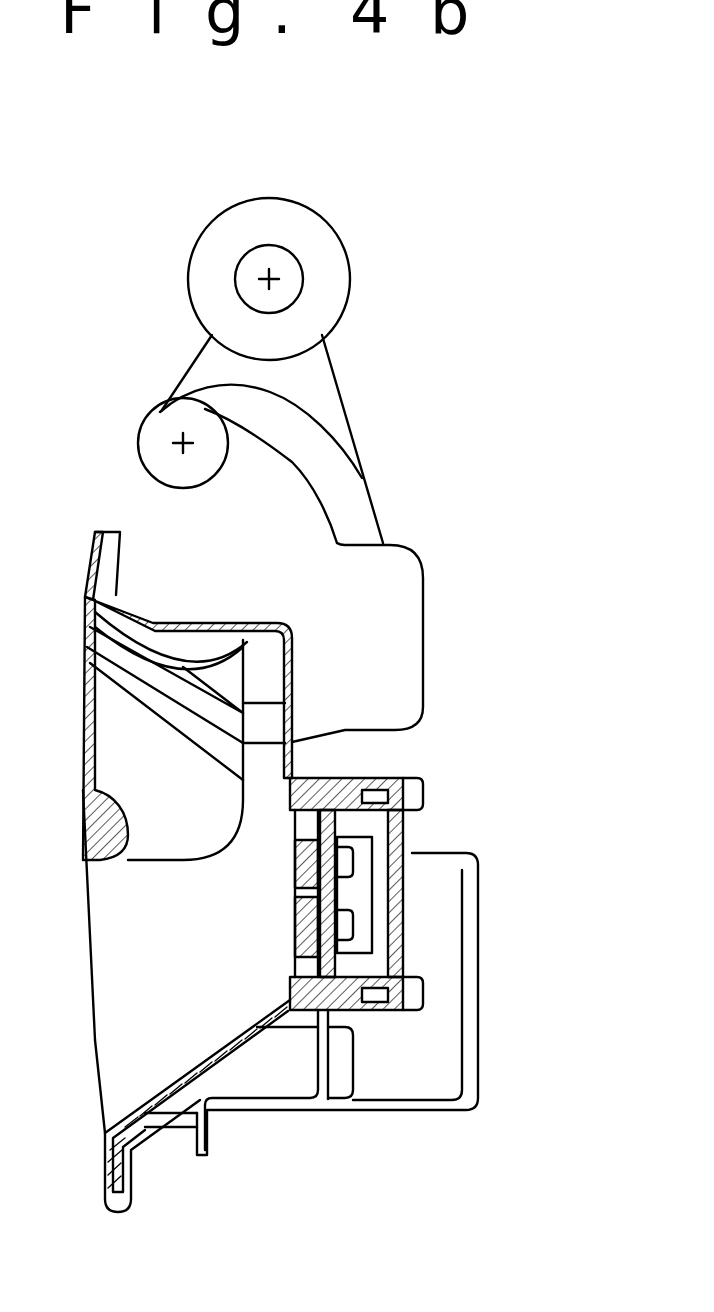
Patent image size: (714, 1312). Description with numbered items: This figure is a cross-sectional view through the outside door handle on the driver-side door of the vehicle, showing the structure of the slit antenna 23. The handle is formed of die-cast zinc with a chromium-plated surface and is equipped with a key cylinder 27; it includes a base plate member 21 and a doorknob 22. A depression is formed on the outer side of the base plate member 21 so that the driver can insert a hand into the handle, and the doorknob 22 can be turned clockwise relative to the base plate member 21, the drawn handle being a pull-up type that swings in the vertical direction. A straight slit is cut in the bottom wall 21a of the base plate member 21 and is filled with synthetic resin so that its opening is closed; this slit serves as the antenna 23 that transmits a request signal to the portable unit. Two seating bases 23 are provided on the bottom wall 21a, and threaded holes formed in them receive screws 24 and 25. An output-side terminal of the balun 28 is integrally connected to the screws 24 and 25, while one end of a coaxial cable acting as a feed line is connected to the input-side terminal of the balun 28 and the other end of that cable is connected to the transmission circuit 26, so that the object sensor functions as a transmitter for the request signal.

The base plate member 21 is at (158, 1080).
The bottom wall 21a is at (300, 783).
The doorknob 22 is at (120, 862).
The antenna 23 is at (290, 903).
The screw 24 is at (342, 850).
The screw 25 is at (343, 937).
The transmission circuit 26 is at (367, 862).
The key cylinder 27 is at (387, 1113).
The balun 28 is at (367, 862).